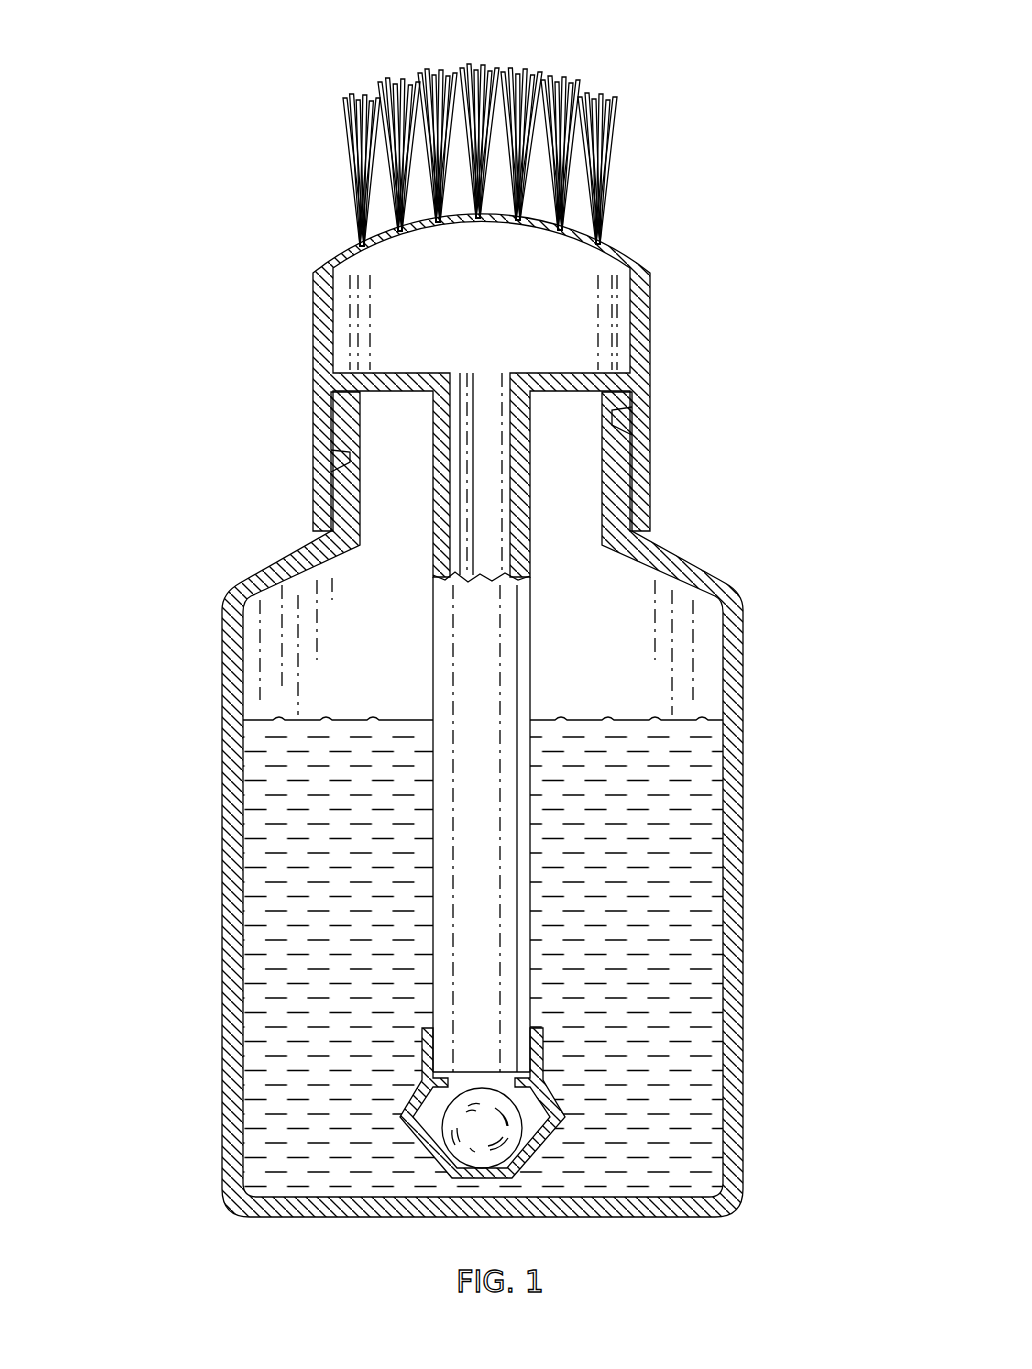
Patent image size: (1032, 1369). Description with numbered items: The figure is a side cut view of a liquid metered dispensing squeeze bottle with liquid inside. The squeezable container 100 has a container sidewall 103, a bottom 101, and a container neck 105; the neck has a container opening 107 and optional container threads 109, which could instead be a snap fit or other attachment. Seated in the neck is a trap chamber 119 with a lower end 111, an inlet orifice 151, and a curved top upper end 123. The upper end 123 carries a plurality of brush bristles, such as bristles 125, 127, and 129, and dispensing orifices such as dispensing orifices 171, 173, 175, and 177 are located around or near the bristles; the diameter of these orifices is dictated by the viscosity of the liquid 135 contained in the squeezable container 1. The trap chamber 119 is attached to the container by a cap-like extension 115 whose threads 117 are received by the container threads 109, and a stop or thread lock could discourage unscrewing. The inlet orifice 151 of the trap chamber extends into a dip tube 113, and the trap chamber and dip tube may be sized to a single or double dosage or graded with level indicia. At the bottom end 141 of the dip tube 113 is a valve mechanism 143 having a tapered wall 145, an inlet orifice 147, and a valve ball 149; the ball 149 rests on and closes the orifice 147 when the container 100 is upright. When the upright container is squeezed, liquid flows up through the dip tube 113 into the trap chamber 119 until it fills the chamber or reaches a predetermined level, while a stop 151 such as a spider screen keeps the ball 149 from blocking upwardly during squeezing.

The squeezable container 1 is at (460, 297).
The squeezable container 100 is at (760, 815).
The bottom 101 is at (273, 1217).
The container sidewall 103 is at (745, 1132).
The container neck 105 is at (648, 506).
The container opening 107 is at (541, 406).
The container threads 109 is at (612, 420).
The lower end 111 is at (383, 383).
The dip tube 113 is at (465, 645).
The cap-like extension 115 is at (320, 413).
The threads 117 is at (364, 467).
The trap chamber 119 is at (388, 303).
The upper end 123 is at (497, 157).
The brush bristles 125 is at (528, 72).
The brush bristles 127 is at (568, 78).
The brush bristles 129 is at (607, 98).
The liquid 135 is at (606, 900).
The bottom end 141 is at (457, 975).
The valve mechanism 143 is at (548, 1112).
The tapered wall 145 is at (541, 1150).
The inlet orifice 147 is at (491, 1174).
The valve ball 149 is at (472, 1153).
The inlet orifice 151 is at (485, 397).
The dispensing orifice 171 is at (480, 228).
The dispensing orifice 173 is at (523, 226).
The dispensing orifice 175 is at (557, 232).
The dispensing orifice 177 is at (600, 248).